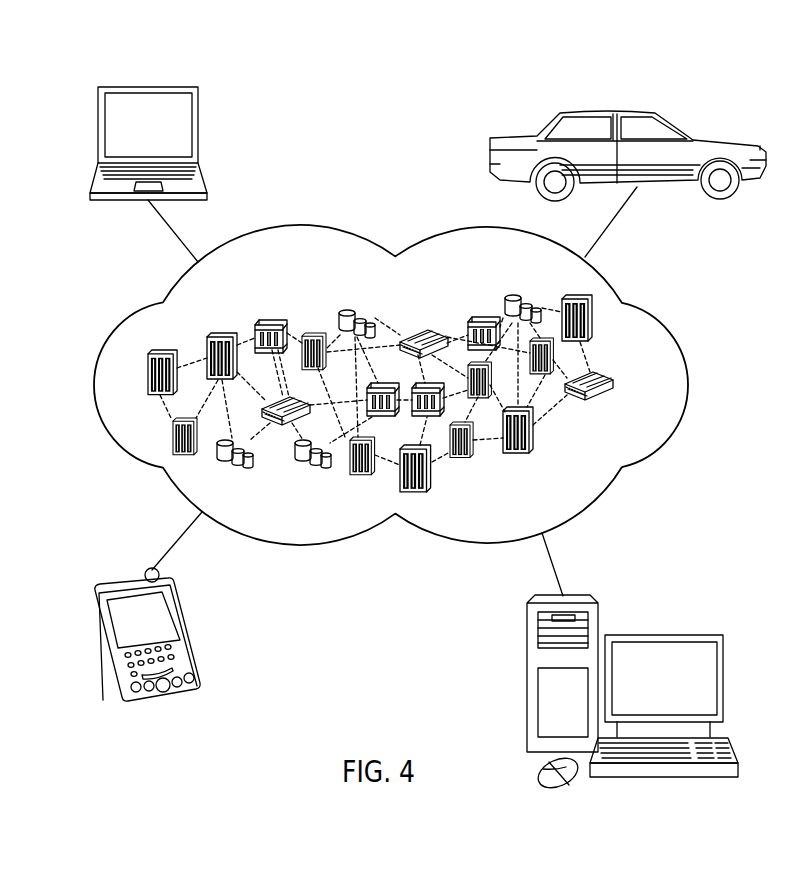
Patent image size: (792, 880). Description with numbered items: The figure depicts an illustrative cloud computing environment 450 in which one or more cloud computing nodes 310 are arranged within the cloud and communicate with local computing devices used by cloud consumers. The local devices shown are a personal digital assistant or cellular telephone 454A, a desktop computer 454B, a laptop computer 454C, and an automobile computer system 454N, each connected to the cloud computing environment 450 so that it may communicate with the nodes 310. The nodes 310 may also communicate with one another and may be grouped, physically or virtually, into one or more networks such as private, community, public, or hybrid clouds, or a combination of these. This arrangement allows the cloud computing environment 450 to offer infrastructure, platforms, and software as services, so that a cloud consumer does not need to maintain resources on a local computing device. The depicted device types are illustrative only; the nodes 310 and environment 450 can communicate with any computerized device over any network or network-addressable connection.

The cloud computing environment 450 is at (673, 305).
The cloud computing node 310 is at (622, 384).
The personal digital assistant (PDA) or cellular telephone 454A is at (131, 582).
The desktop computer 454B is at (663, 632).
The laptop computer 454C is at (147, 85).
The automobile computer system 454N is at (613, 105).